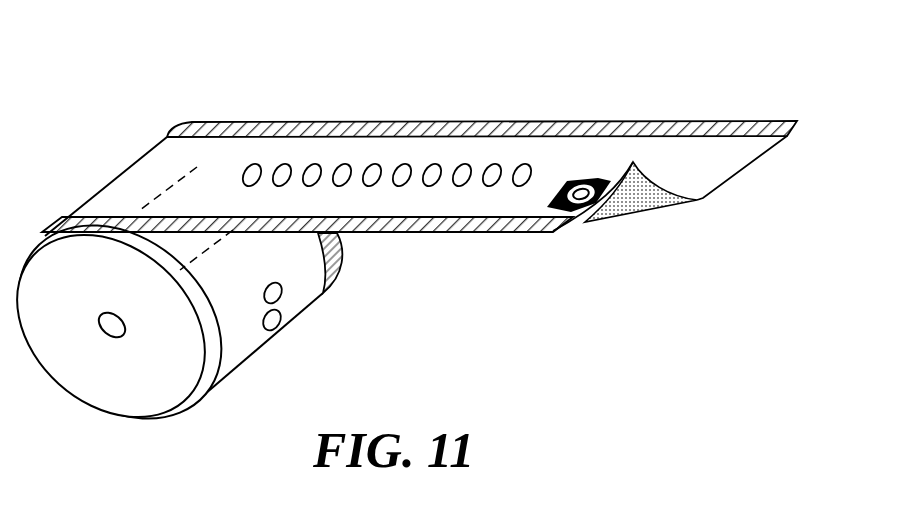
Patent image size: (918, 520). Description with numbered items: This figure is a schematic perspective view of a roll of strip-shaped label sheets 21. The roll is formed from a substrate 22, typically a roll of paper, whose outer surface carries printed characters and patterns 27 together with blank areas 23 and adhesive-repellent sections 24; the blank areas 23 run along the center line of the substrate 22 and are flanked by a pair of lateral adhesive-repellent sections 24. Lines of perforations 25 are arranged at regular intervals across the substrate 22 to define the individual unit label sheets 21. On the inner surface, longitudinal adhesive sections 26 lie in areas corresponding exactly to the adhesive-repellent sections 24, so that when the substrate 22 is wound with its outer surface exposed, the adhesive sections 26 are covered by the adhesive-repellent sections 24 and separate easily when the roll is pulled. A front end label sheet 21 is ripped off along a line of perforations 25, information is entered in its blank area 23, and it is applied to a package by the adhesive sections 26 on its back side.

The label sheet 21 is at (398, 229).
The substrate 22 is at (437, 233).
The blank area 23 is at (223, 170).
The adhesive-repellent section 24 is at (365, 230).
The line of perforations 25 is at (197, 167).
The adhesive section 26 is at (630, 202).
The characters and patterns 27 is at (491, 164).